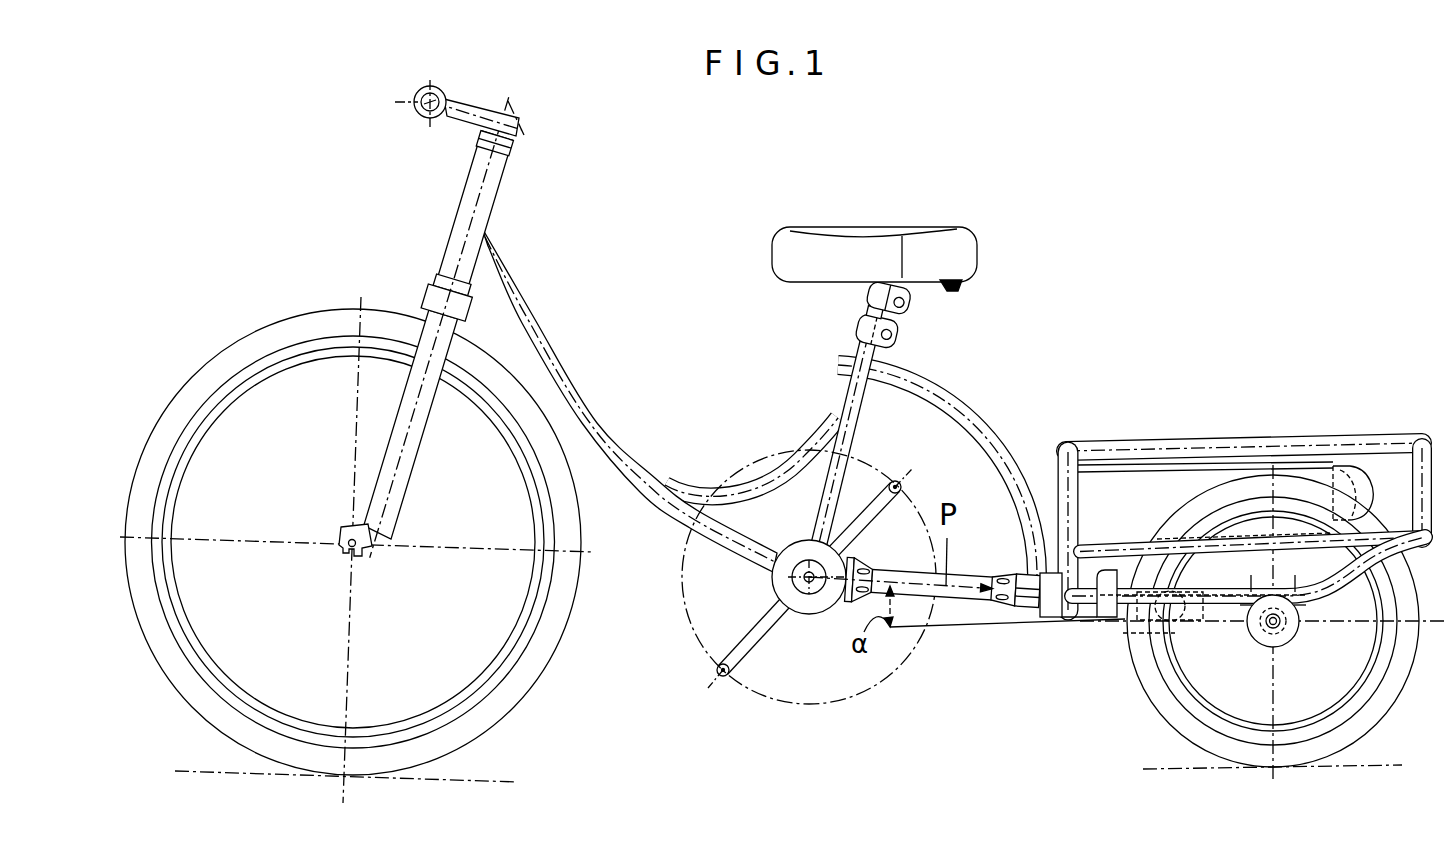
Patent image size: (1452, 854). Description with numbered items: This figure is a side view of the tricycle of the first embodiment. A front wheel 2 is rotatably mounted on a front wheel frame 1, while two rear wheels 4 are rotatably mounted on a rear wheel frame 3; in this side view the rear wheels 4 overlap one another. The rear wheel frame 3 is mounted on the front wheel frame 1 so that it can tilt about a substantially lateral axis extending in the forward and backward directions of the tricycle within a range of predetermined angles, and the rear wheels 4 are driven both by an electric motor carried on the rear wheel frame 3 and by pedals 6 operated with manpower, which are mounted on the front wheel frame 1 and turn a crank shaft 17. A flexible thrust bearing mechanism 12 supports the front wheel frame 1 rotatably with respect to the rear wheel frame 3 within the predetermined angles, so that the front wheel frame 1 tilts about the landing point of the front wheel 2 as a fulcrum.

The front wheel frame 1 is at (530, 268).
The front wheel 2 is at (300, 313).
The rear wheel frame 3 is at (1093, 440).
The rear wheel 4 is at (1148, 673).
The pedals 6 is at (722, 680).
The flexible thrust bearing mechanism 12 is at (1052, 608).
The crank shaft 17 is at (818, 592).